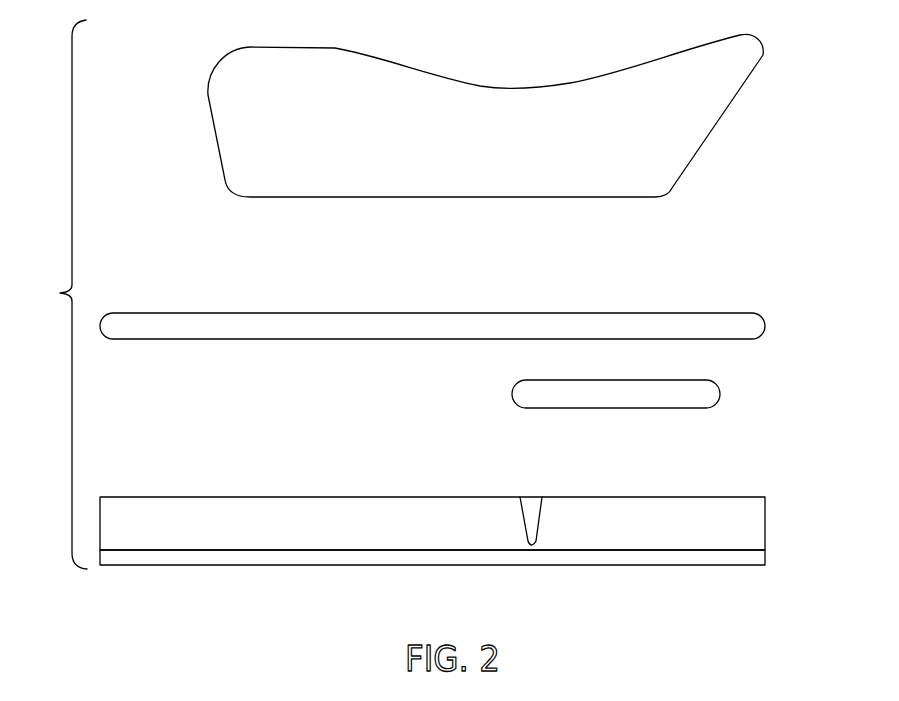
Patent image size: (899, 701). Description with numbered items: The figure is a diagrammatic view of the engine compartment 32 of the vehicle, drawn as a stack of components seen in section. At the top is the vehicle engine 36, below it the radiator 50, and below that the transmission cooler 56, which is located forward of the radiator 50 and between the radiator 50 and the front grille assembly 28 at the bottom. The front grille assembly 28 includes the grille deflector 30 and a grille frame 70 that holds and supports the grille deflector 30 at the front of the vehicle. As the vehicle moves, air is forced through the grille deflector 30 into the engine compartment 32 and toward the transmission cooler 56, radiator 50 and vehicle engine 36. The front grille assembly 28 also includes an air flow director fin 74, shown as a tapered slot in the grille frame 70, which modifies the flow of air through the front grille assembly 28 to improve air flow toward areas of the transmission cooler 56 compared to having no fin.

The front grille assembly 28 is at (168, 582).
The grille deflector 30 is at (661, 567).
The engine compartment 32 is at (57, 294).
The vehicle engine 36 is at (715, 137).
The radiator 50 is at (562, 313).
The transmission cooler 56 is at (721, 395).
The grille frame 70 is at (649, 497).
The air flow director fin 74 is at (547, 512).